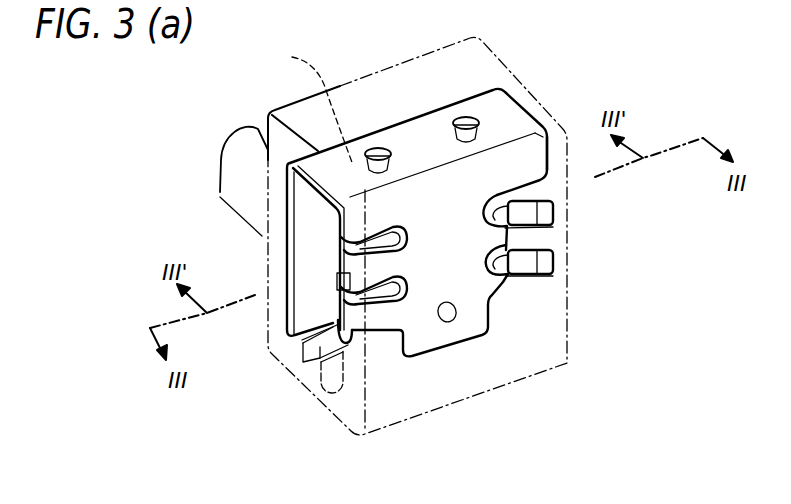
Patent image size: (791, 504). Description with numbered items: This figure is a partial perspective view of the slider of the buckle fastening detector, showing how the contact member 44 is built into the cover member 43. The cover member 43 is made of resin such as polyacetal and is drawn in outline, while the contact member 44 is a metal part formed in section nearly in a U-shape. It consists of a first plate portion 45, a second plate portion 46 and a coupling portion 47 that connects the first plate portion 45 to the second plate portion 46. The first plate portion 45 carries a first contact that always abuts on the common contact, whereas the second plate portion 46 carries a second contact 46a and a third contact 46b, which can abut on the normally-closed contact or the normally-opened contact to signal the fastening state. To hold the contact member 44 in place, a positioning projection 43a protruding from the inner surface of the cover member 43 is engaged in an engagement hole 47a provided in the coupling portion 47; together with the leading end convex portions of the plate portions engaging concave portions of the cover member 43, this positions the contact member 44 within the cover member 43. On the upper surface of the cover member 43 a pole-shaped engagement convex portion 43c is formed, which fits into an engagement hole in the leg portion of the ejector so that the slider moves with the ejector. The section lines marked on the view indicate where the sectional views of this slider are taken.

The cover member 43 is at (540, 88).
The positioning projection 43a is at (303, 219).
The engagement convex portion 43c is at (232, 128).
The contact member 44 is at (550, 162).
The first plate portion 45 is at (310, 261).
The second plate portion 46 is at (417, 333).
The second contact 46a is at (343, 262).
The third contact 46b is at (553, 260).
The coupling portion 47 is at (414, 145).
The engagement hole 47a is at (387, 147).